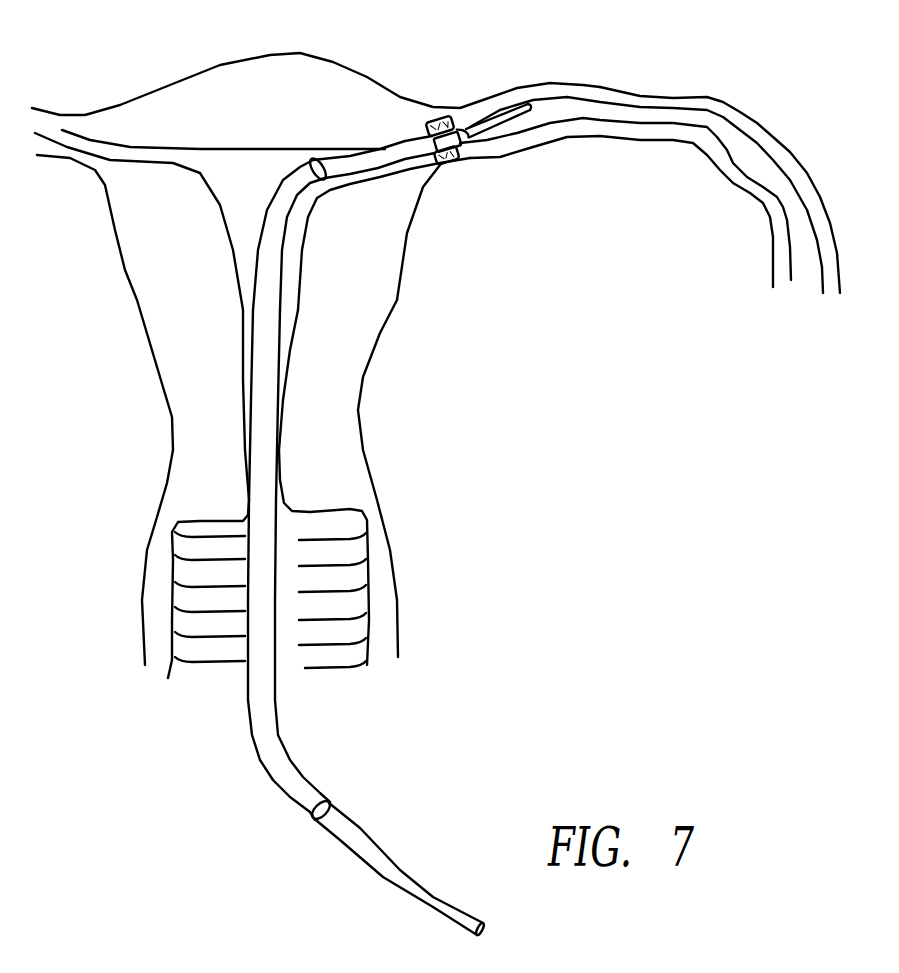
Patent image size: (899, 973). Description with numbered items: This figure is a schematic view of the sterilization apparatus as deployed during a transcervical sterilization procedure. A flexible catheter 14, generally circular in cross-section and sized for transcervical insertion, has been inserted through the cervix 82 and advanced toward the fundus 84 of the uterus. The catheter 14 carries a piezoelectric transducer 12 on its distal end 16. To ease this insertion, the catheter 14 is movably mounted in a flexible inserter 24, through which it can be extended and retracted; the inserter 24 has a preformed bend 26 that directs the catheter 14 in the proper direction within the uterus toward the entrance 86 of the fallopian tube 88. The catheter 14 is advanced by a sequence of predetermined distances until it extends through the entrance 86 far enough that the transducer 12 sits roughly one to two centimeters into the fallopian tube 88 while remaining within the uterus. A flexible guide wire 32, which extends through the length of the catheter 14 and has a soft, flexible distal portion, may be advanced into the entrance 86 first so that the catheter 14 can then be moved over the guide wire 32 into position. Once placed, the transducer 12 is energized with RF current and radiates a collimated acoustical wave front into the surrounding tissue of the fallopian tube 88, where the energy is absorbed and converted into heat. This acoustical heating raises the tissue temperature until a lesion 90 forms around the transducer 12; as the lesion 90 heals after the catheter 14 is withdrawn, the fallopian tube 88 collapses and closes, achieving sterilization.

The piezoelectric transducer 12 is at (433, 117).
The flexible catheter 14 is at (372, 160).
The distal end 16 is at (404, 160).
The inserter 24 is at (258, 274).
The preformed bend 26 is at (300, 171).
The flexible guide wire 32 is at (508, 115).
The cervix 82 is at (302, 486).
The fundus 84 is at (196, 146).
The entrance 86 is at (384, 133).
The fallopian tube 88 is at (597, 76).
The lesion 90 is at (461, 163).